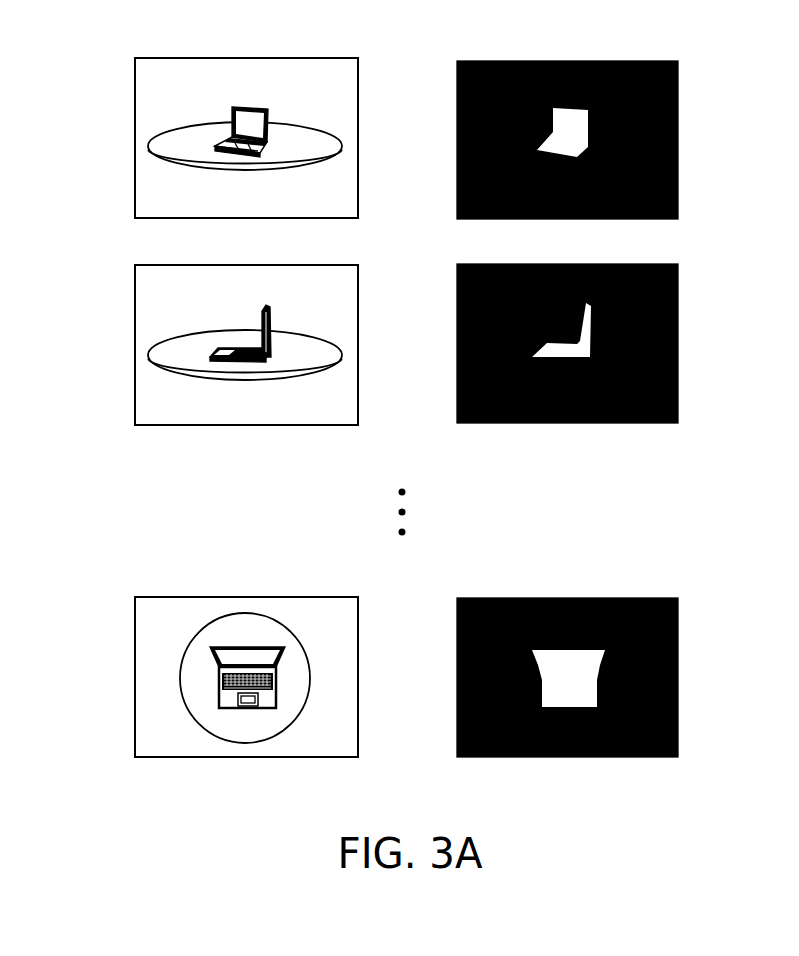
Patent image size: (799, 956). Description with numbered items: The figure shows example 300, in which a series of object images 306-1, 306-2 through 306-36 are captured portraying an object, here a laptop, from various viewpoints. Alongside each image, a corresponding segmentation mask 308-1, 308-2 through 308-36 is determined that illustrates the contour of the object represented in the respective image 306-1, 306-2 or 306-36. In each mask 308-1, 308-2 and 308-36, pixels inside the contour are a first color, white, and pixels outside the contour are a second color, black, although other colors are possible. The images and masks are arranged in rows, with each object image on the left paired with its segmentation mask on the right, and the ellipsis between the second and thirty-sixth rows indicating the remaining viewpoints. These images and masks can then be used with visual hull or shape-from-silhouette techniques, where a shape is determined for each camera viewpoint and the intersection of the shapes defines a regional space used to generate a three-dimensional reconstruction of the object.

The example 300 is at (723, 88).
The object image 306-1 is at (246, 156).
The segmentation mask 308-1 is at (567, 157).
The object image 306-2 is at (246, 363).
The segmentation mask 308-2 is at (567, 362).
The object image 306-36 is at (246, 696).
The segmentation mask 308-36 is at (567, 697).